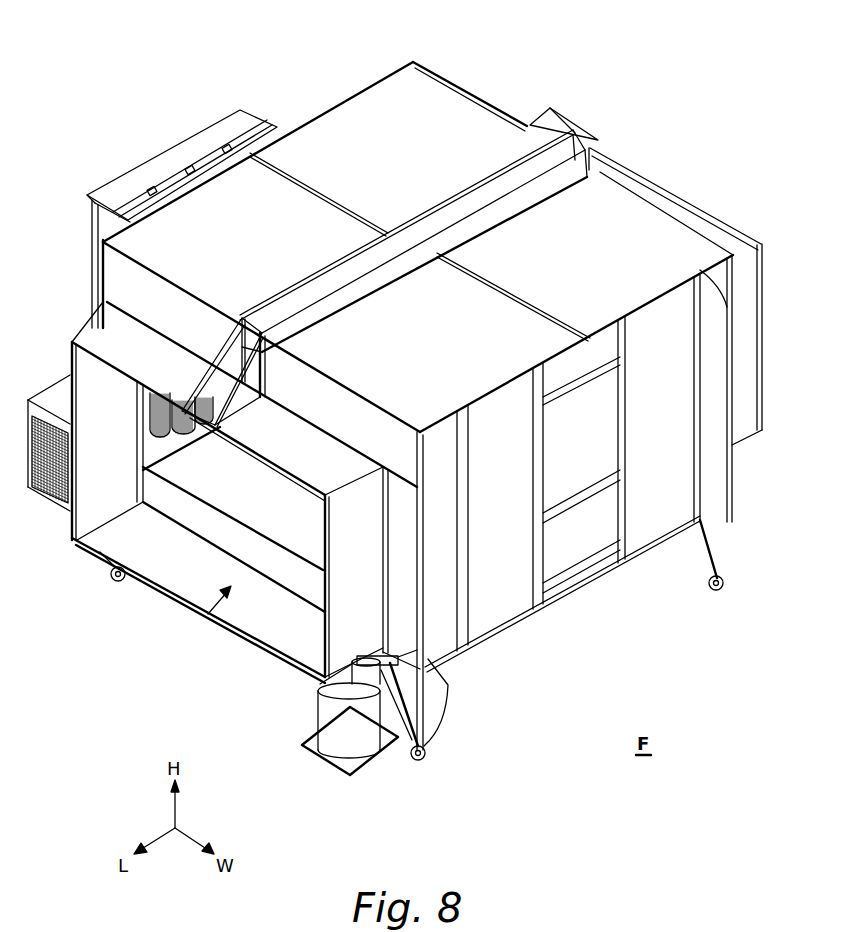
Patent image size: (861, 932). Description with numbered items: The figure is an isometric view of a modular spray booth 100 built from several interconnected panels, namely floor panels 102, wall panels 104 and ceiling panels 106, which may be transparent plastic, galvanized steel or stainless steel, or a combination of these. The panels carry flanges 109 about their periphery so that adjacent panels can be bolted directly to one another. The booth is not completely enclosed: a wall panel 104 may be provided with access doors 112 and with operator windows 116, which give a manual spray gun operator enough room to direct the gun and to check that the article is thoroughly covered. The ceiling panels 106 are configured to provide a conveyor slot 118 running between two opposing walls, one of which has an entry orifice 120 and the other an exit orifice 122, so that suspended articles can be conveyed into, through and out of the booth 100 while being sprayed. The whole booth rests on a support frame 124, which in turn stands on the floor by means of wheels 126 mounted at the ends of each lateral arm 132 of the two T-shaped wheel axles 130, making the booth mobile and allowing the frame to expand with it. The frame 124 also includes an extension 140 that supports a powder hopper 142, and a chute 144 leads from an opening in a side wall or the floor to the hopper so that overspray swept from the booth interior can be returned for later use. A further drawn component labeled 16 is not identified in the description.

The modular spray booth 100 is at (104, 117).
The enclosure 16 is at (98, 230).
The floor panels 102 is at (595, 445).
The wall panels 104 is at (117, 268).
The ceiling panels 106 is at (220, 190).
The flanges 109 is at (697, 375).
The access doors 112 is at (577, 573).
The operator windows 116 is at (572, 460).
The conveyor slot 118 is at (508, 177).
The entry orifice 120 is at (712, 208).
The exit orifice 122 is at (200, 605).
The support frame 124 is at (458, 708).
The wheels 126 is at (423, 748).
The T-shaped wheel axles 130 is at (182, 607).
The lateral arm 132 is at (120, 573).
The extension 140 is at (387, 747).
The powder hopper 142 is at (318, 715).
The chute 144 is at (392, 670).